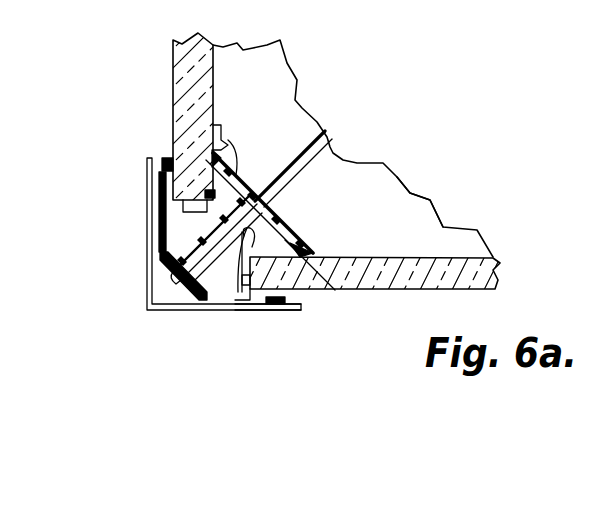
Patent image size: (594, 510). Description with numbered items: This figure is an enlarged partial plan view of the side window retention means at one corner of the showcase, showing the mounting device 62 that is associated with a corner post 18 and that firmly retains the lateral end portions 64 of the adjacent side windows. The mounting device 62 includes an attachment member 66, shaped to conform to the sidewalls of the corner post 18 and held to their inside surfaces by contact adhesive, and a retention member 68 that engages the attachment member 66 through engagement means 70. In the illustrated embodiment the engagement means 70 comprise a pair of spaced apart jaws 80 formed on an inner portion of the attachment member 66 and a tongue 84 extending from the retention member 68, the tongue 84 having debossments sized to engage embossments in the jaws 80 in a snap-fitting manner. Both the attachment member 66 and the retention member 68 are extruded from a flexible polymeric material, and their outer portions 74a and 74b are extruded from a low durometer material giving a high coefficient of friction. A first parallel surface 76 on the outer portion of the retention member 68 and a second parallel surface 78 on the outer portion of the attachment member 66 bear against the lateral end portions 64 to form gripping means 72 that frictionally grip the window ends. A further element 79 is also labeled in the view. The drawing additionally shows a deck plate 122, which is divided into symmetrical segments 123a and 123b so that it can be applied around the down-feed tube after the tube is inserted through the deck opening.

The corner post 18 is at (160, 310).
The mounting device 62 is at (292, 212).
The lateral end portion 64 is at (175, 76).
The attachment member 66 is at (160, 290).
The retention member 68 is at (244, 187).
The engagement means 70 is at (236, 292).
The gripping means 72 is at (168, 158).
The outer portion 74a is at (158, 171).
The outer portion 74b is at (220, 163).
The first parallel surface 76 is at (232, 178).
The second parallel surface 78 is at (172, 182).
The diagonal brace 79 is at (163, 243).
The jaws 80 is at (216, 312).
The tongue 84 is at (290, 240).
The deck plate 122 is at (287, 120).
The segment 123a is at (307, 130).
The segment 123b is at (397, 210).